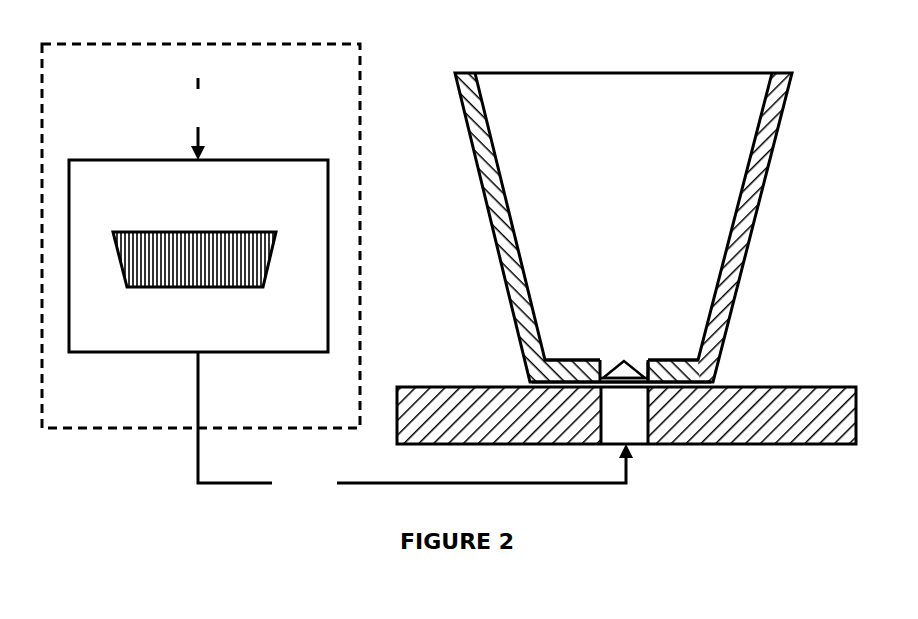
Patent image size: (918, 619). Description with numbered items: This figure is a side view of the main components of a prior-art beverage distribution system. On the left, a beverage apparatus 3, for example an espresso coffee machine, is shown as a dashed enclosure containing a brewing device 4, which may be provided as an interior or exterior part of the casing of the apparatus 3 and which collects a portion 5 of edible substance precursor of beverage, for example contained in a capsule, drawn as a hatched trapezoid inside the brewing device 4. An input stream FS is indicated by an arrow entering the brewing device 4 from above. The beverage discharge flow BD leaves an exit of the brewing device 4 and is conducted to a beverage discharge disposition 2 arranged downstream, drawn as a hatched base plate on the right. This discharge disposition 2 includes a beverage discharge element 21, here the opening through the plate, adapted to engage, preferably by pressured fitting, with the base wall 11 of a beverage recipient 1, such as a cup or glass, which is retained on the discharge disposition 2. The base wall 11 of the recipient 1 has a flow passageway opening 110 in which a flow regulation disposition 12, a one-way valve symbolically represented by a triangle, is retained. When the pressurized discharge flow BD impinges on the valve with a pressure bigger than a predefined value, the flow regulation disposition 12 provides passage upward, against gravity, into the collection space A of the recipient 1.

The beverage recipient 1 is at (623, 210).
The base wall 11 is at (573, 346).
The flow passageway opening 110 is at (660, 360).
The flow regulation disposition 12 is at (629, 359).
The beverage discharge disposition 2 is at (626, 401).
The beverage discharge element 21 is at (646, 458).
The beverage apparatus 3 is at (201, 225).
The brewing device 4 is at (198, 244).
The portion of edible substance precursor of beverage 5 is at (194, 247).
The collection space A is at (623, 211).
The feed signal FS is at (200, 119).
The beverage discharge flow BD is at (415, 424).